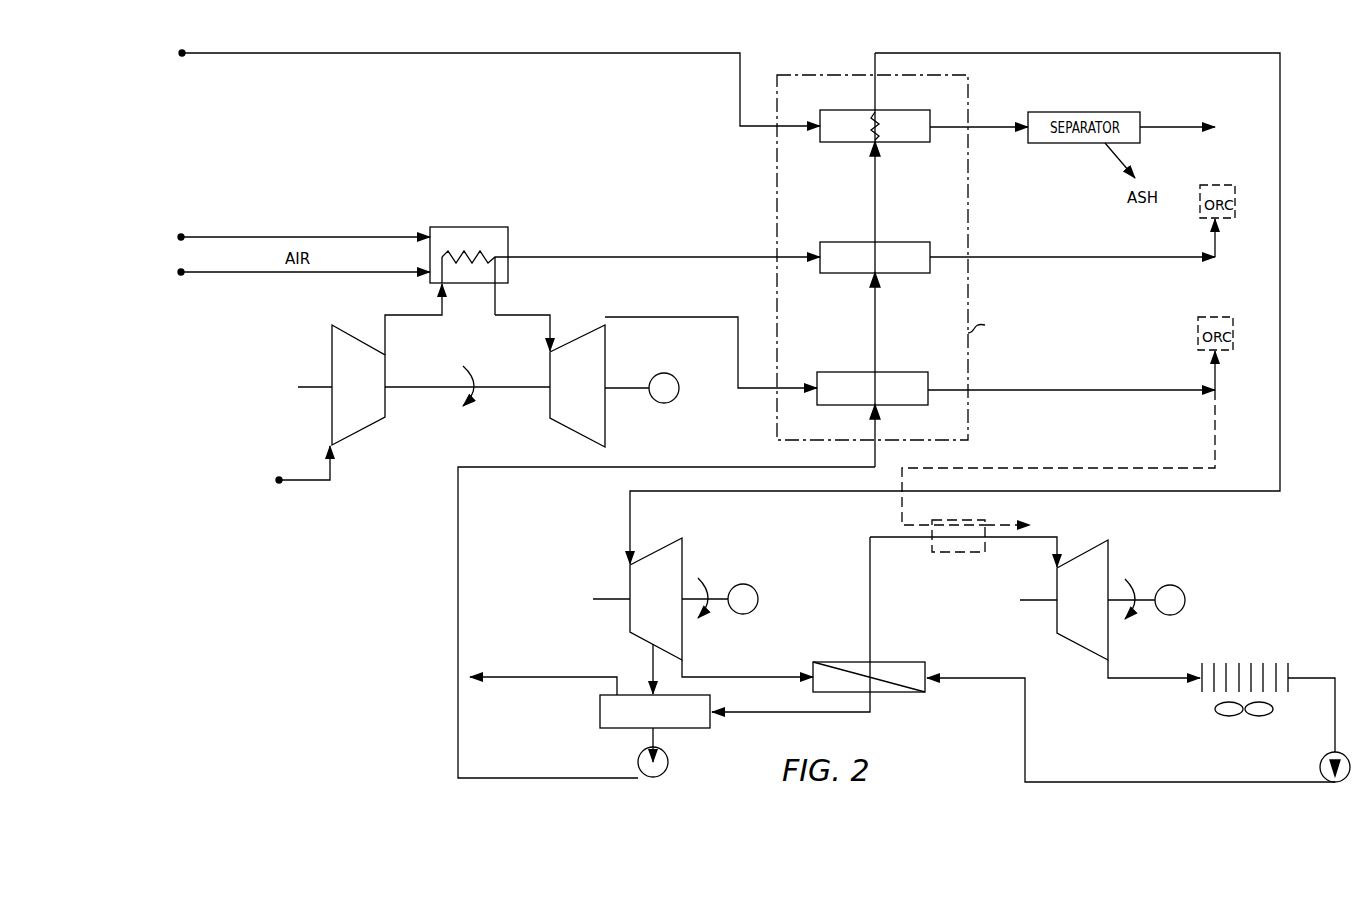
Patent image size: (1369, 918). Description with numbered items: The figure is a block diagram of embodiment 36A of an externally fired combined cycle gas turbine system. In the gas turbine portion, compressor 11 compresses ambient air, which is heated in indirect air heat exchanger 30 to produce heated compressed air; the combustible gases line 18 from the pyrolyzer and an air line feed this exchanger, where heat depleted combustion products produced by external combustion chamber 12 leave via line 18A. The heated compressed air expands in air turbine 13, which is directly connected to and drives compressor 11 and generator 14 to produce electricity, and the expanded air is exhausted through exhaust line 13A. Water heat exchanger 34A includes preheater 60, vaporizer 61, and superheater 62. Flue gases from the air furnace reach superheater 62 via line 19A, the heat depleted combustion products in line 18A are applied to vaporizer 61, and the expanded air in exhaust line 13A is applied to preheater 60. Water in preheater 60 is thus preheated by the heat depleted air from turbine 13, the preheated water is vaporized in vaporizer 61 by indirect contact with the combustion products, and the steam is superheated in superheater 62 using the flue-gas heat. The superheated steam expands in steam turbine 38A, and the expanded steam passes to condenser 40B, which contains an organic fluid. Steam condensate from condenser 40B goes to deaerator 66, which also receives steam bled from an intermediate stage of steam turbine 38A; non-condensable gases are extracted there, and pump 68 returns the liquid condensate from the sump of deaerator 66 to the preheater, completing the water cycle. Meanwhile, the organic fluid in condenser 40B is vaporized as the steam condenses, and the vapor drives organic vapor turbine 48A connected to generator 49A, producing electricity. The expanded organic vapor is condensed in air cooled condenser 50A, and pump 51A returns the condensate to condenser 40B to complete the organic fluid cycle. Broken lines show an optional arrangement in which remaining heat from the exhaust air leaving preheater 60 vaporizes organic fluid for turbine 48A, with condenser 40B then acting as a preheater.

The compressor 11 is at (340, 325).
The external combustion chamber 12 is at (470, 285).
The air turbine 13 is at (605, 325).
The exhaust line 13A is at (672, 316).
The generator 14 is at (664, 372).
The combustible gases line from pyrolyzer 18 is at (181, 237).
The line 18A is at (672, 256).
The line 19A is at (672, 55).
The indirect air heat exchanger 30 is at (508, 262).
The water heat exchanger 34A is at (968, 195).
The embodiment 36A is at (437, 545).
The steam turbine 38A is at (672, 538).
The condenser 40B is at (889, 662).
The organic vapor turbine 48A is at (1095, 540).
The generator 49A is at (1178, 585).
The condenser 50A is at (1250, 663).
The pump 51A is at (1320, 770).
The preheater 60 is at (889, 372).
The vaporizer 61 is at (889, 242).
The superheater 62 is at (889, 110).
The deaerator 66 is at (712, 718).
The pump 68 is at (668, 766).